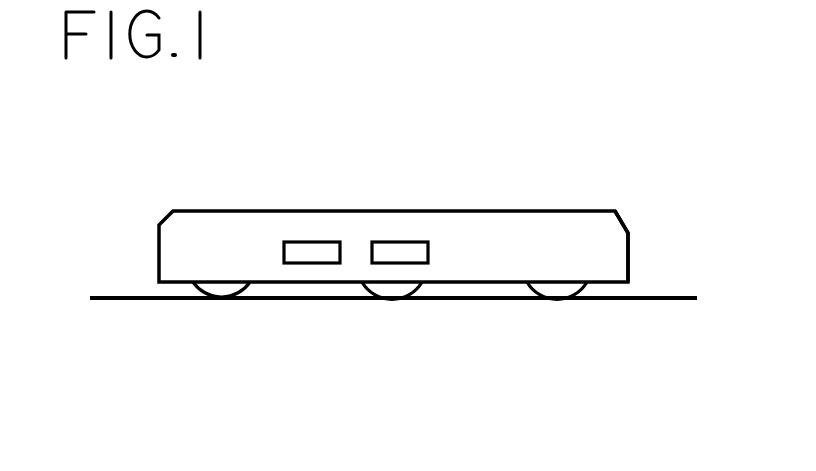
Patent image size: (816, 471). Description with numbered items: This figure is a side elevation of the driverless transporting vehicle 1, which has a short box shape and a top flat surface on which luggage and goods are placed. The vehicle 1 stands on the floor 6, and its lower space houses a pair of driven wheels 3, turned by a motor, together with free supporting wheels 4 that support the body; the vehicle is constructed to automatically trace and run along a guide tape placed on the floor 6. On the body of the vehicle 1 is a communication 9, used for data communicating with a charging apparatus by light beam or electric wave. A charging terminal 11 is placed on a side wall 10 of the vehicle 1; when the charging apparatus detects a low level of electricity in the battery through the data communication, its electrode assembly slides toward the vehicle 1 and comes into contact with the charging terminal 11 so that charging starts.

The vehicle 1 is at (481, 213).
The driven wheels 3 is at (392, 290).
The free supporting wheels 4 is at (223, 290).
The floor 6 is at (664, 298).
The communication 9 is at (402, 248).
The side wall 10 is at (553, 230).
The charging terminal 11 is at (310, 248).